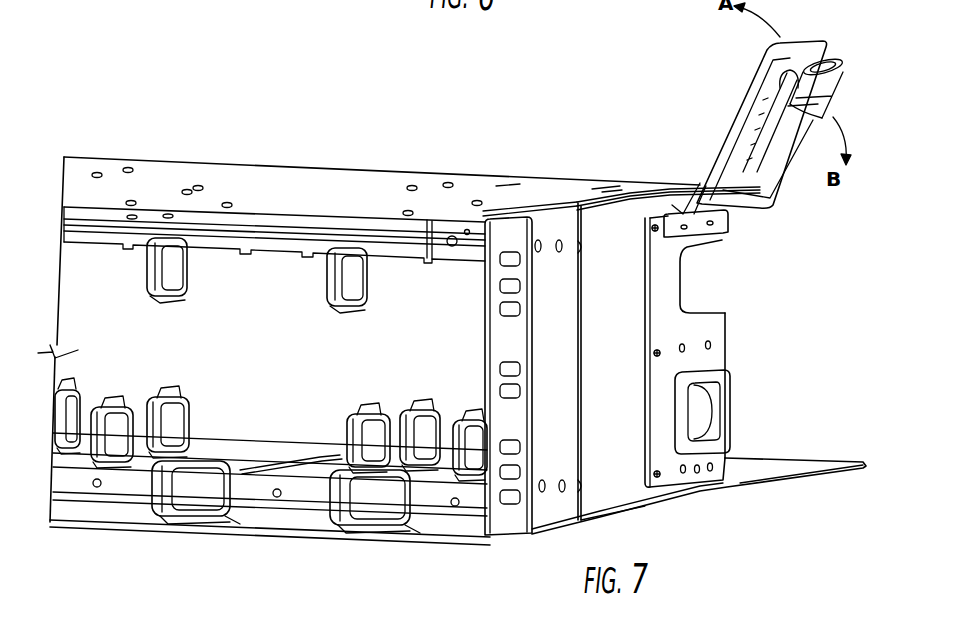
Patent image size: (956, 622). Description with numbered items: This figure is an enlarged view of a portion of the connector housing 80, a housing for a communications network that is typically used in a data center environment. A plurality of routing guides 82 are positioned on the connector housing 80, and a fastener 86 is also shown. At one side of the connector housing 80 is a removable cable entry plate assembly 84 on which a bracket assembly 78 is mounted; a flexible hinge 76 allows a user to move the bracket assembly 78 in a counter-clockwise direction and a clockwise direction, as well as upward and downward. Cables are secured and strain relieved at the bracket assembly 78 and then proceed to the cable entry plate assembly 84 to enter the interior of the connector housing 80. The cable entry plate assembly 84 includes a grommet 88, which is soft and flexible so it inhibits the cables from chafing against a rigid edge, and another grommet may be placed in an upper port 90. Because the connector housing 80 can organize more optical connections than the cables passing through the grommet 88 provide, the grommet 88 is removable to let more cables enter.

The flexible hinge 76 is at (680, 212).
The bracket assembly 78 is at (696, 40).
The connector housing 80 is at (490, 176).
The routing guides 82 is at (229, 304).
The cable entry plate assembly 84 is at (766, 322).
The fastener 86 is at (488, 592).
The grommet 88 is at (770, 369).
The upper port 90 is at (702, 276).